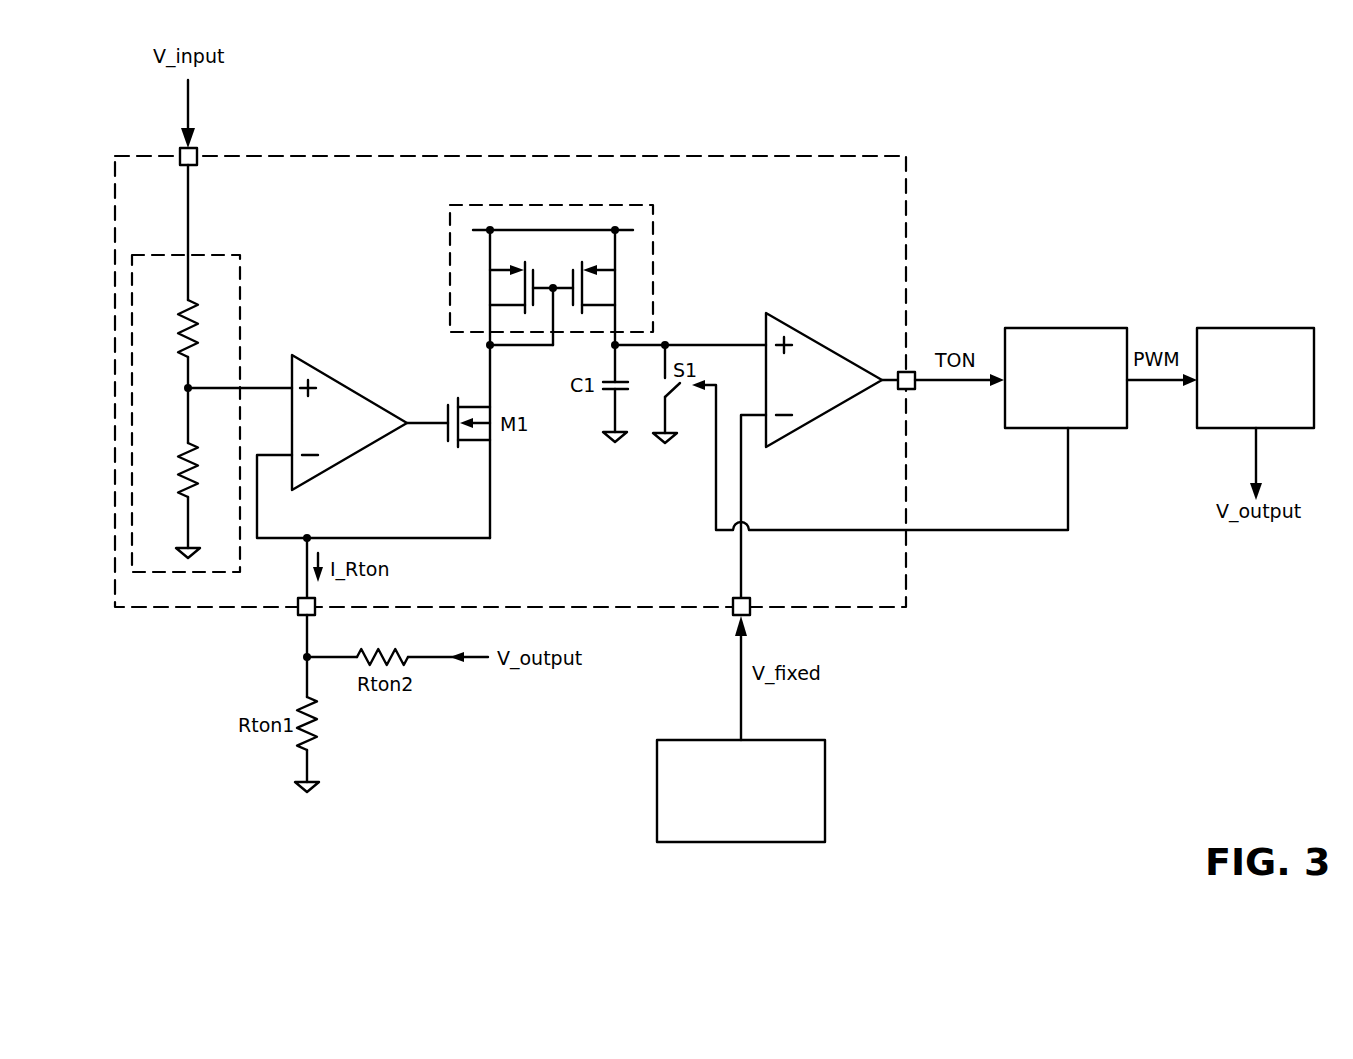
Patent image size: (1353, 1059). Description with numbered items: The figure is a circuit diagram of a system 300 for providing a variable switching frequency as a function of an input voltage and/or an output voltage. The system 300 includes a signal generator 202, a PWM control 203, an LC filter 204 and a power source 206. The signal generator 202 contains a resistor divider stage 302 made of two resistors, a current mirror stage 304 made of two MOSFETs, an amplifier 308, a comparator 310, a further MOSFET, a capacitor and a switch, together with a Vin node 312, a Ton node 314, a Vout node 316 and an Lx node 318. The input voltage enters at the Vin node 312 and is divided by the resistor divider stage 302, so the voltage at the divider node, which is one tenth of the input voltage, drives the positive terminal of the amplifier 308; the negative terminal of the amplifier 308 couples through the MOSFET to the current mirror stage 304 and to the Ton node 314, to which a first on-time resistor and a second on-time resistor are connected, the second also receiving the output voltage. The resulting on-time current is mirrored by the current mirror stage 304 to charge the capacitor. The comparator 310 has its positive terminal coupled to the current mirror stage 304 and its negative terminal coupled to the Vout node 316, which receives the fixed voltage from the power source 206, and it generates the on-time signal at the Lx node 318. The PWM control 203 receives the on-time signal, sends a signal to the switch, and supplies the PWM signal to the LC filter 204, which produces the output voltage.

The system 300 is at (1186, 80).
The signal generator 202 is at (825, 156).
The resistor divider stage 302 is at (228, 255).
The current mirror stage 304 is at (450, 226).
The amplifier 308 is at (330, 377).
The comparator 310 is at (808, 337).
The Vin node 312 is at (197, 150).
The Ton node 314 is at (298, 614).
The Vout node 316 is at (733, 614).
The Lx node 318 is at (914, 390).
The PWM control 203 is at (1030, 328).
The LC filter 204 is at (1225, 328).
The power source 206 is at (795, 740).